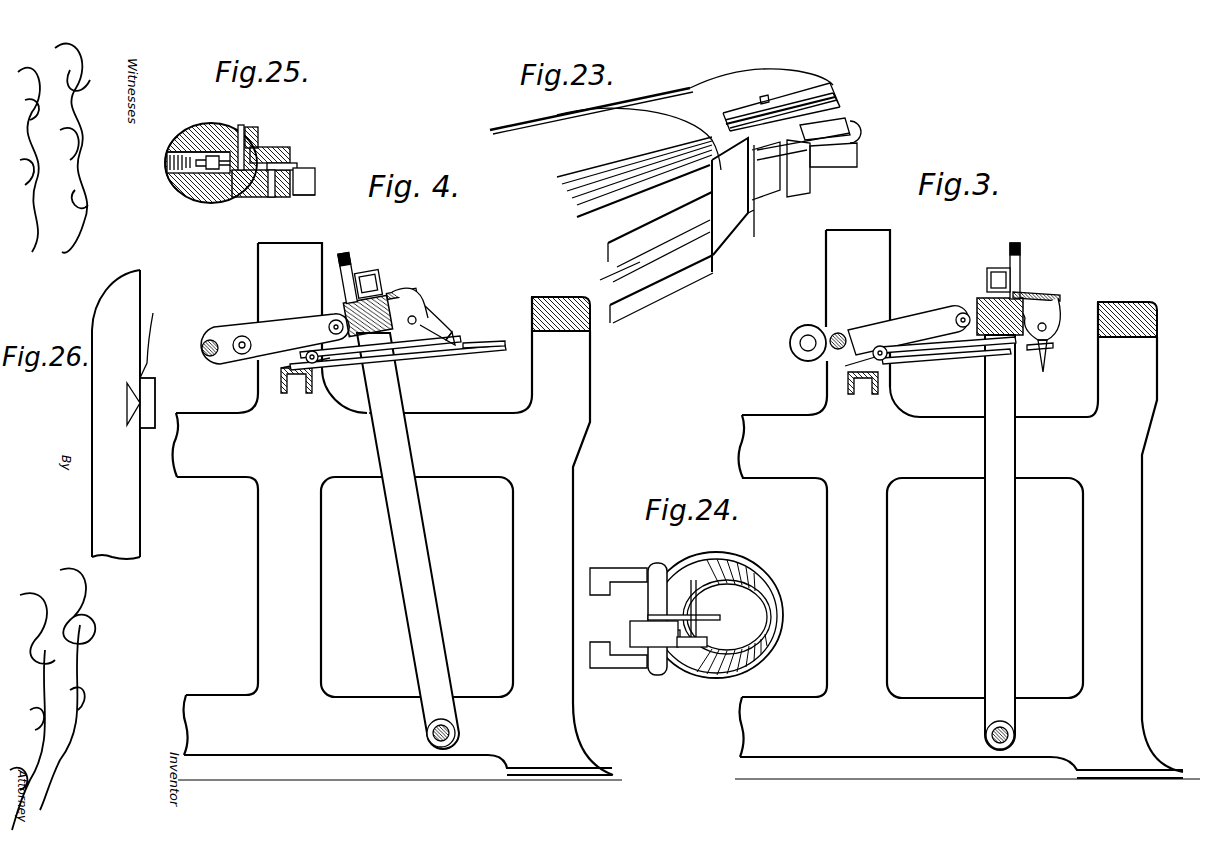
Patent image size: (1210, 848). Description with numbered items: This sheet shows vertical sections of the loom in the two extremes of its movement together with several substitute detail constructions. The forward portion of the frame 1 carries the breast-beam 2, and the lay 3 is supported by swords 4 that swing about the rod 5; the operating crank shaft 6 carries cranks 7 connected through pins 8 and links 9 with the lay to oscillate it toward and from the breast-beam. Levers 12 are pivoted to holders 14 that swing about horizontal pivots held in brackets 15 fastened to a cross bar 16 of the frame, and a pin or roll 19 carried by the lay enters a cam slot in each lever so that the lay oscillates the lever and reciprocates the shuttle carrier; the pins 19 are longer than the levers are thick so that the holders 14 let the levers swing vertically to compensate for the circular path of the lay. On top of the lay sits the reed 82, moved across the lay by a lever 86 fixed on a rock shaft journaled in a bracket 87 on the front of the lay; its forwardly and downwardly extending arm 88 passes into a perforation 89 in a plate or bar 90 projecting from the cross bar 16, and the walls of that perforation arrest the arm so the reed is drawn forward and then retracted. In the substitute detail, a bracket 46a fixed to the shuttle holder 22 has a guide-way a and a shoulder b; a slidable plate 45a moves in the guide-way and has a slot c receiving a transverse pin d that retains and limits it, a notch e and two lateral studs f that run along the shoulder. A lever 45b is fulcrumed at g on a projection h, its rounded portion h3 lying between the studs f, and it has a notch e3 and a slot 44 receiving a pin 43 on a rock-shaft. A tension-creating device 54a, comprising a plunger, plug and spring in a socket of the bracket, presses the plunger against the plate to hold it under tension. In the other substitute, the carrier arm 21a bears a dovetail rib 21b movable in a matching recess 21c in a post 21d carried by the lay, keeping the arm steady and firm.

In FIG. 4, the frame 1 is at (612, 483).
In FIG. 3, the frame 1 is at (1185, 472).
In FIG. 4, the breast-beam 2 is at (567, 312).
In FIG. 3, the breast-beam 2 is at (1126, 318).
In FIG. 4, the lay 3 is at (396, 302).
In FIG. 3, the lay 3 is at (1026, 300).
In FIG. 4, the swords 4 is at (418, 589).
In FIG. 3, the swords 4 is at (993, 572).
In FIG. 4, the rod 5 is at (426, 734).
In FIG. 3, the rod 5 is at (1017, 734).
In FIG. 3, the operating crank shaft 6 is at (801, 328).
In FIG. 4, the cranks 7 is at (226, 327).
In FIG. 3, the cranks 7 is at (812, 362).
In FIG. 4, the pins 8 is at (200, 349).
In FIG. 3, the pins 8 is at (843, 332).
In FIG. 4, the links 9 is at (285, 328).
In FIG. 3, the links 9 is at (893, 325).
In FIG. 4, the levers 12 is at (447, 352).
In FIG. 3, the levers 12 is at (941, 353).
In FIG. 3, the holders 14 is at (908, 356).
In FIG. 4, the brackets 15 is at (313, 365).
In FIG. 3, the brackets 15 is at (884, 362).
In FIG. 4, the cross bar 16 is at (288, 382).
In FIG. 3, the cross bar 16 is at (853, 394).
In FIG. 4, the pin or roll 19 is at (344, 395).
In FIG. 3, the pin or roll 19 is at (958, 318).
In FIG. 23, the shuttle holder 22 is at (661, 143).
In FIG. 4, the shuttle holder 22 is at (381, 279).
In FIG. 24, the shuttle holder 22 is at (750, 610).
In FIG. 3, the shuttle holder 22 is at (990, 270).
In FIG. 23, the pin 43 is at (762, 193).
In FIG. 23, the slot 44 is at (758, 180).
In FIG. 25, the slidable plate 45a is at (280, 160).
In FIG. 23, the slidable plate 45a is at (840, 127).
In FIG. 24, the slidable plate 45a is at (658, 608).
In FIG. 25, the lever 45b is at (243, 197).
In FIG. 23, the lever 45b is at (797, 183).
In FIG. 24, the lever 45b is at (645, 646).
In FIG. 25, the bracket 46a is at (176, 178).
In FIG. 23, the bracket 46a is at (713, 87).
In FIG. 24, the bracket 46a is at (746, 572).
In FIG. 25, the tension-creating device 54a is at (173, 152).
In FIG. 4, the reed 82 is at (353, 261).
In FIG. 3, the reed 82 is at (1022, 250).
In FIG. 4, the lever 86 is at (410, 290).
In FIG. 3, the lever 86 is at (1052, 317).
In FIG. 4, the bracket 87 is at (406, 333).
In FIG. 3, the bracket 87 is at (1024, 298).
In FIG. 4, the arm 88 is at (455, 330).
In FIG. 3, the arm 88 is at (1044, 372).
In FIG. 4, the perforation 89 is at (478, 350).
In FIG. 4, the plate or bar 90 is at (490, 346).
In FIG. 3, the plate or bar 90 is at (1050, 350).
In FIG. 26, the arm 21a is at (150, 410).
In FIG. 26, the dovetail rib 21b is at (130, 403).
In FIG. 26, the recess 21c is at (161, 331).
In FIG. 26, the post 21d is at (118, 526).
In FIG. 25, the guide-way a is at (182, 187).
In FIG. 24, the guide-way a is at (741, 612).
In FIG. 25, the shoulder b is at (198, 198).
In FIG. 24, the shoulder b is at (768, 662).
In FIG. 25, the slot c is at (205, 138).
In FIG. 25, the transverse pin d is at (258, 138).
In FIG. 23, the transverse pin d is at (767, 100).
In FIG. 24, the transverse pin d is at (693, 580).
In FIG. 25, the notch e is at (298, 165).
In FIG. 23, the notch e is at (862, 130).
In FIG. 25, the notch e3 is at (306, 196).
In FIG. 23, the notch e3 is at (833, 157).
In FIG. 24, the lateral studs f is at (680, 648).
In FIG. 25, the fulcrum g is at (270, 195).
In FIG. 25, the projection h is at (315, 184).
In FIG. 24, the projection h is at (676, 650).
In FIG. 25, the rounded portion h3 is at (238, 128).